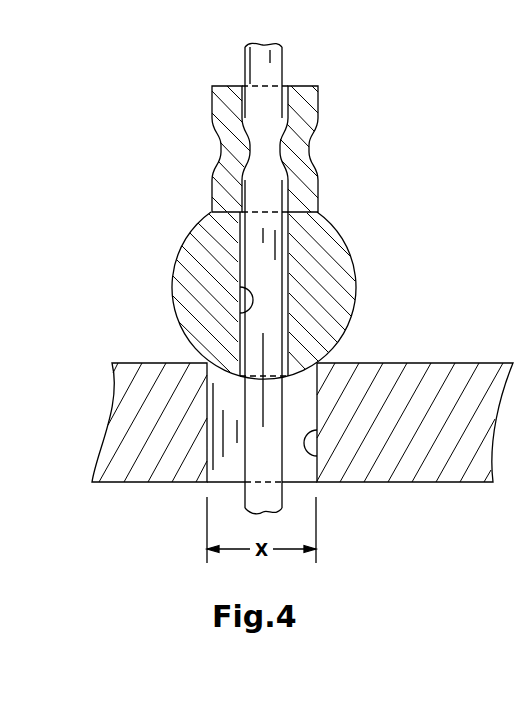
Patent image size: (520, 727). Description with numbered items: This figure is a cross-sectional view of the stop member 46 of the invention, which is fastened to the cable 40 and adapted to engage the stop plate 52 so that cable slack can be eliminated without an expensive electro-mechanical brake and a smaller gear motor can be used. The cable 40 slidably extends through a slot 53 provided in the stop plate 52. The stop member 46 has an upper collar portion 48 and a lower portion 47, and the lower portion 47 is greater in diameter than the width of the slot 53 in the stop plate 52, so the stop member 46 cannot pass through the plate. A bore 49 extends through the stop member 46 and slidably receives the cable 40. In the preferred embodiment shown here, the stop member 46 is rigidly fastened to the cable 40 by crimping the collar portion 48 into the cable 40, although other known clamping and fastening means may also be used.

The cable 40 is at (270, 68).
The stop member 46 is at (379, 223).
The lower portion 47 is at (335, 322).
The upper collar portion 48 is at (308, 149).
The bore 49 is at (247, 311).
The stop plate 52 is at (422, 463).
The slot 53 is at (318, 452).